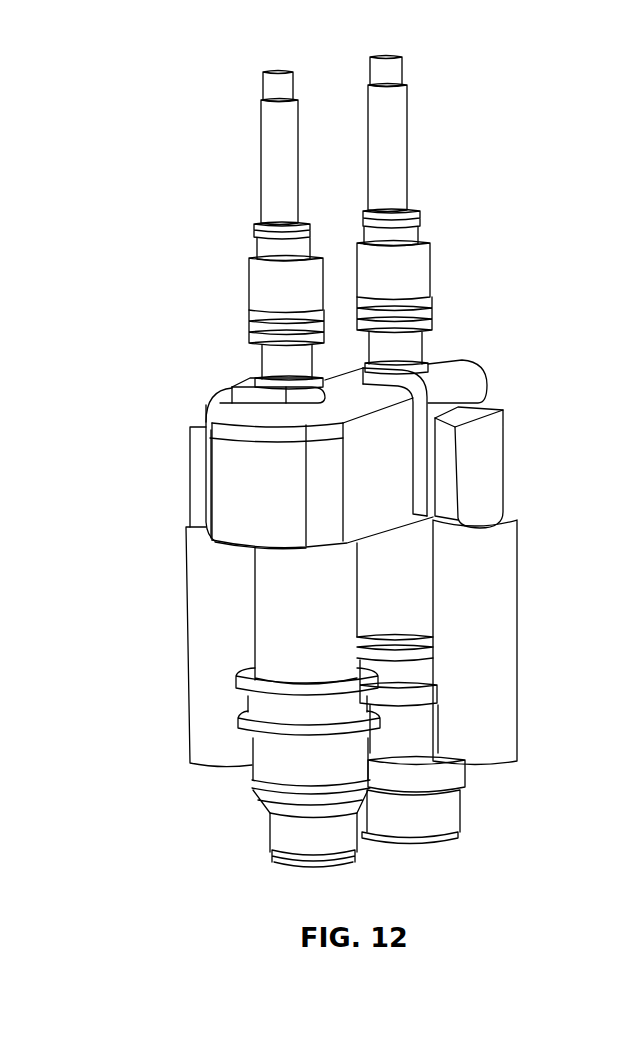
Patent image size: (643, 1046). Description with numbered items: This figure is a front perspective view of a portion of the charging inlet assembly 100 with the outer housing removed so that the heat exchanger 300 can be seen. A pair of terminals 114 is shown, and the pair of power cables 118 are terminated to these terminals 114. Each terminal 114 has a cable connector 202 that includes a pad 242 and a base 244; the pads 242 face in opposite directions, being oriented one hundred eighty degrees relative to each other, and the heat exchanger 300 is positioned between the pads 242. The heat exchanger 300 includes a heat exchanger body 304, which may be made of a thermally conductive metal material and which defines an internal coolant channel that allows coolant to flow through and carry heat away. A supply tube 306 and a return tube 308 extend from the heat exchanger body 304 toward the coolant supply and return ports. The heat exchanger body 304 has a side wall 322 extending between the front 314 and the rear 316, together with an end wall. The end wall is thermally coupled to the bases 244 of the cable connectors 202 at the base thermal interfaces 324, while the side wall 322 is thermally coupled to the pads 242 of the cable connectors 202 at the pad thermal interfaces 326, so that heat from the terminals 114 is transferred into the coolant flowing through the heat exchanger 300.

The charging inlet assembly 100 is at (188, 190).
The terminal 114 is at (273, 283).
The power cable 118 is at (208, 617).
The cable connector 202 is at (497, 367).
The pad 242 is at (222, 397).
The base 244 is at (250, 392).
The heat exchanger 300 is at (240, 476).
The heat exchanger body 304 is at (255, 552).
The supply tube 306 is at (453, 802).
The return tube 308 is at (268, 765).
The front 314 is at (448, 305).
The rear 316 is at (285, 560).
The side wall 322 is at (238, 505).
The base thermal interface 324 is at (253, 411).
The pad thermal interface 326 is at (407, 496).